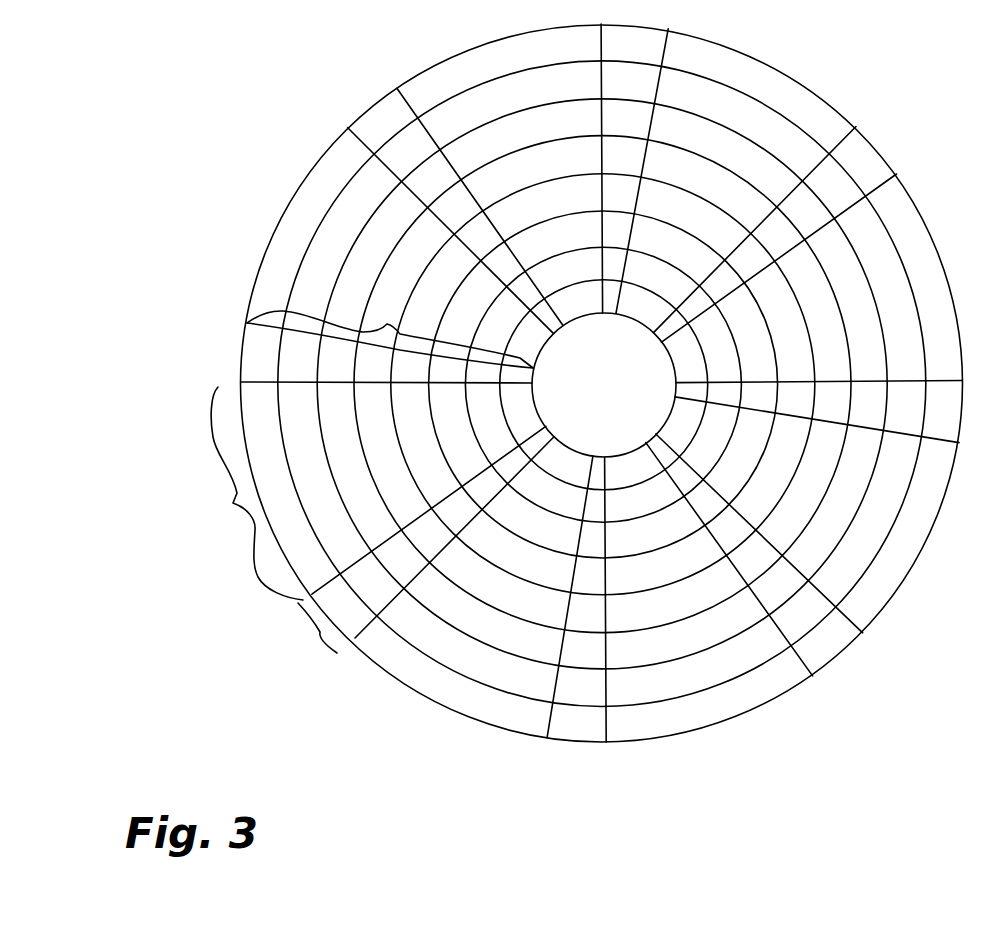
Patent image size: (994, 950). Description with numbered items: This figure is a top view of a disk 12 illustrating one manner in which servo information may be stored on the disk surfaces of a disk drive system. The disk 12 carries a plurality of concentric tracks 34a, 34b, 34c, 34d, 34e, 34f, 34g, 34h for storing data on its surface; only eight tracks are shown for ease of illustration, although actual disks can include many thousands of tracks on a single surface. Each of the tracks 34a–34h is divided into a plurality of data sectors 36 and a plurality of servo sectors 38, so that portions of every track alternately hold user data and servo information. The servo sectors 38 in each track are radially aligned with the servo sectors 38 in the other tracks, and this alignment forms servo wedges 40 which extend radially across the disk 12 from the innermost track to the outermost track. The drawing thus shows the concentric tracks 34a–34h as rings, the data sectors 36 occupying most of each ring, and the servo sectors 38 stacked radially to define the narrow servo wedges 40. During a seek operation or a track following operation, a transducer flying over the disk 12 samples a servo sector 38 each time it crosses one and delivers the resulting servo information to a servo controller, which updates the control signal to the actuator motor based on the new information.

The disk 12 is at (293, 188).
The concentric track 34a is at (790, 682).
The concentric track 34b is at (728, 668).
The concentric track 34c is at (672, 652).
The concentric track 34d is at (627, 622).
The concentric track 34e is at (702, 212).
The concentric track 34f is at (763, 343).
The concentric track 34g is at (717, 442).
The concentric track 34h is at (635, 467).
The data sectors 36 is at (233, 503).
The servo sectors 38 is at (318, 632).
The servo wedges 40 is at (390, 327).